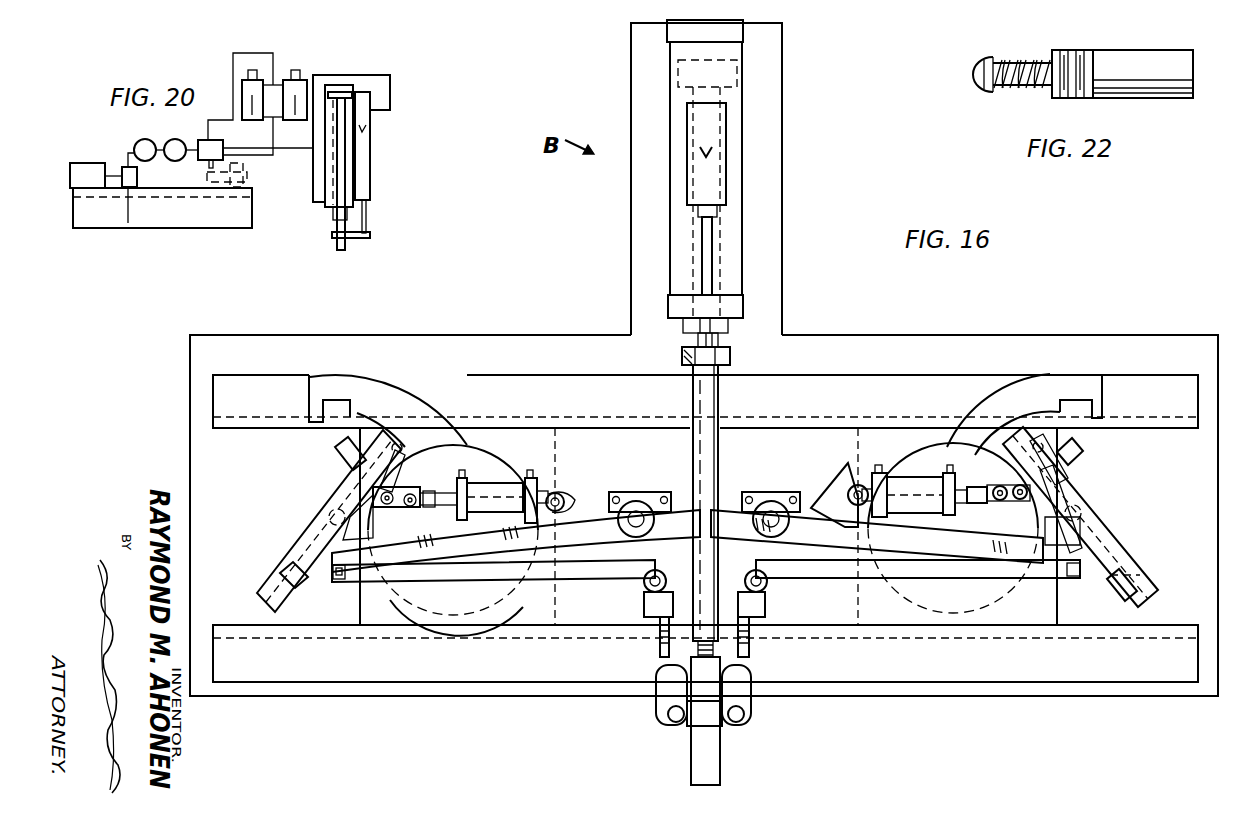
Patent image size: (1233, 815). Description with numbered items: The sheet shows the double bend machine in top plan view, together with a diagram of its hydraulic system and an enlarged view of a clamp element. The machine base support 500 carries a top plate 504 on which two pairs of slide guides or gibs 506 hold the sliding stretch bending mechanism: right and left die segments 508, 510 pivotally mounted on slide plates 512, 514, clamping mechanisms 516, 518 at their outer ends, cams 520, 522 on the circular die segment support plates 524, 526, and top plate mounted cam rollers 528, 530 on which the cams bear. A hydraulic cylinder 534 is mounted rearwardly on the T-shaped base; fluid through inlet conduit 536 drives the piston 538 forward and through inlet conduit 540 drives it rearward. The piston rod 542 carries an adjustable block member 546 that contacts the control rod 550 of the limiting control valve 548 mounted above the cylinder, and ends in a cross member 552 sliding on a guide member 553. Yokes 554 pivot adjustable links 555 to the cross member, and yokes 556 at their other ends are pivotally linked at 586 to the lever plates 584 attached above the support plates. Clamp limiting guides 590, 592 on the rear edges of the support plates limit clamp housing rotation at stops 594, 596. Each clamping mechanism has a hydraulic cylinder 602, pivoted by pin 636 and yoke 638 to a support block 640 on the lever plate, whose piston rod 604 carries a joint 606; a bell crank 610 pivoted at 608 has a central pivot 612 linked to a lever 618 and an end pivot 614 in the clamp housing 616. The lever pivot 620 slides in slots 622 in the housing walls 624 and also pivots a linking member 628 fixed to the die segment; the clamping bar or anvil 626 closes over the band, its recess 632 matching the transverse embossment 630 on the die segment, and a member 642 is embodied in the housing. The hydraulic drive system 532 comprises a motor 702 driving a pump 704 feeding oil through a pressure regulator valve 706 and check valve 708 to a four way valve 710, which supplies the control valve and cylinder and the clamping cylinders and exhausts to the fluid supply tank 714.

In FIG. 16, the machine base support 500 is at (1047, 330).
In FIG. 16, the top plate 504 is at (190, 357).
In FIG. 16, the slide guides or gibs 506 is at (237, 380).
In FIG. 16, the right die segment 508 is at (913, 585).
In FIG. 16, the left die segment 510 is at (537, 590).
In FIG. 16, the right slide plate or die support mount 512 is at (1057, 613).
In FIG. 16, the left slide plate or die support mount 514 is at (377, 617).
In FIG. 16, the right clamping mechanism 516 is at (1085, 491).
In FIG. 16, the left clamping mechanism 518 is at (262, 588).
In FIG. 16, the right cam 520 is at (847, 477).
In FIG. 16, the left cam 522 is at (604, 519).
In FIG. 16, the right circular die segment support plate 524 is at (928, 438).
In FIG. 16, the left circular die segment support plate 526 is at (478, 447).
In FIG. 16, the right cam roller or follower 528 is at (778, 500).
In FIG. 16, the left cam roller or follower 530 is at (634, 500).
In FIG. 20, the hydraulic drive system 532 is at (257, 212).
In FIG. 20, the hydraulic cylinder 534 is at (350, 173).
In FIG. 16, the hydraulic cylinder 534 is at (742, 238).
In FIG. 16, the rear inlet conduit 536 is at (667, 30).
In FIG. 20, the piston 538 is at (347, 97).
In FIG. 16, the piston 538 is at (737, 72).
In FIG. 16, the forward inlet conduit 540 is at (668, 306).
In FIG. 20, the piston rod 542 is at (340, 222).
In FIG. 16, the piston rod 542 is at (718, 392).
In FIG. 20, the block member 546 is at (360, 238).
In FIG. 16, the block member 546 is at (732, 356).
In FIG. 20, the limiting control valve 548 is at (372, 143).
In FIG. 16, the limiting control valve 548 is at (726, 163).
In FIG. 20, the valve control rod 550 is at (366, 220).
In FIG. 16, the valve control rod 550 is at (712, 340).
In FIG. 16, the cross member 552 is at (702, 719).
In FIG. 16, the supporting guide member 553 is at (720, 753).
In FIG. 16, the yokes 554 is at (660, 705).
In FIG. 16, the adjustable links 555 is at (660, 646).
In FIG. 16, the yokes 556 is at (650, 608).
In FIG. 16, the lever plate 584 is at (510, 603).
In FIG. 16, the pivot link 586 is at (643, 583).
In FIG. 16, the right clamp limiting guide 590 is at (1013, 388).
In FIG. 16, the left clamp limiting guide 592 is at (388, 388).
In FIG. 16, the right stop 594 is at (1100, 402).
In FIG. 16, the left stop 596 is at (322, 416).
In FIG. 20, the hydraulic piston type cylinder 602 is at (256, 72).
In FIG. 16, the hydraulic piston type cylinder 602 is at (507, 478).
In FIG. 16, the piston rod 604 is at (967, 503).
In FIG. 16, the joint 606 is at (990, 500).
In FIG. 16, the pivot 608 is at (1020, 488).
In FIG. 16, the bell crank 610 is at (398, 487).
In FIG. 16, the central pivot 612 is at (1020, 480).
In FIG. 16, the end pivot 614 is at (1011, 406).
In FIG. 16, the clamp housing 616 is at (1100, 523).
In FIG. 16, the lever 618 is at (370, 505).
In FIG. 16, the pivot 620 is at (1043, 508).
In FIG. 16, the slots 622 is at (330, 517).
In FIG. 16, the upper and lower walls 624 is at (1150, 597).
In FIG. 16, the clamping bar or anvil 626 is at (297, 597).
In FIG. 16, the linking member 628 is at (363, 533).
In FIG. 16, the transverse embossment 630 is at (1062, 575).
In FIG. 16, the recess 632 is at (1127, 570).
In FIG. 16, the pin 636 is at (540, 480).
In FIG. 16, the yoke 638 is at (552, 493).
In FIG. 16, the support block 640 is at (560, 523).
In FIG. 22, the member 642 is at (1117, 99).
In FIG. 16, the member 642 is at (338, 455).
In FIG. 20, the motor 702 is at (105, 164).
In FIG. 20, the pump 704 is at (125, 166).
In FIG. 20, the pressure regulator valve 706 is at (143, 140).
In FIG. 20, the check valve 708 is at (176, 140).
In FIG. 20, the four way valve 710 is at (225, 155).
In FIG. 20, the fluid supply tank 714 is at (135, 229).